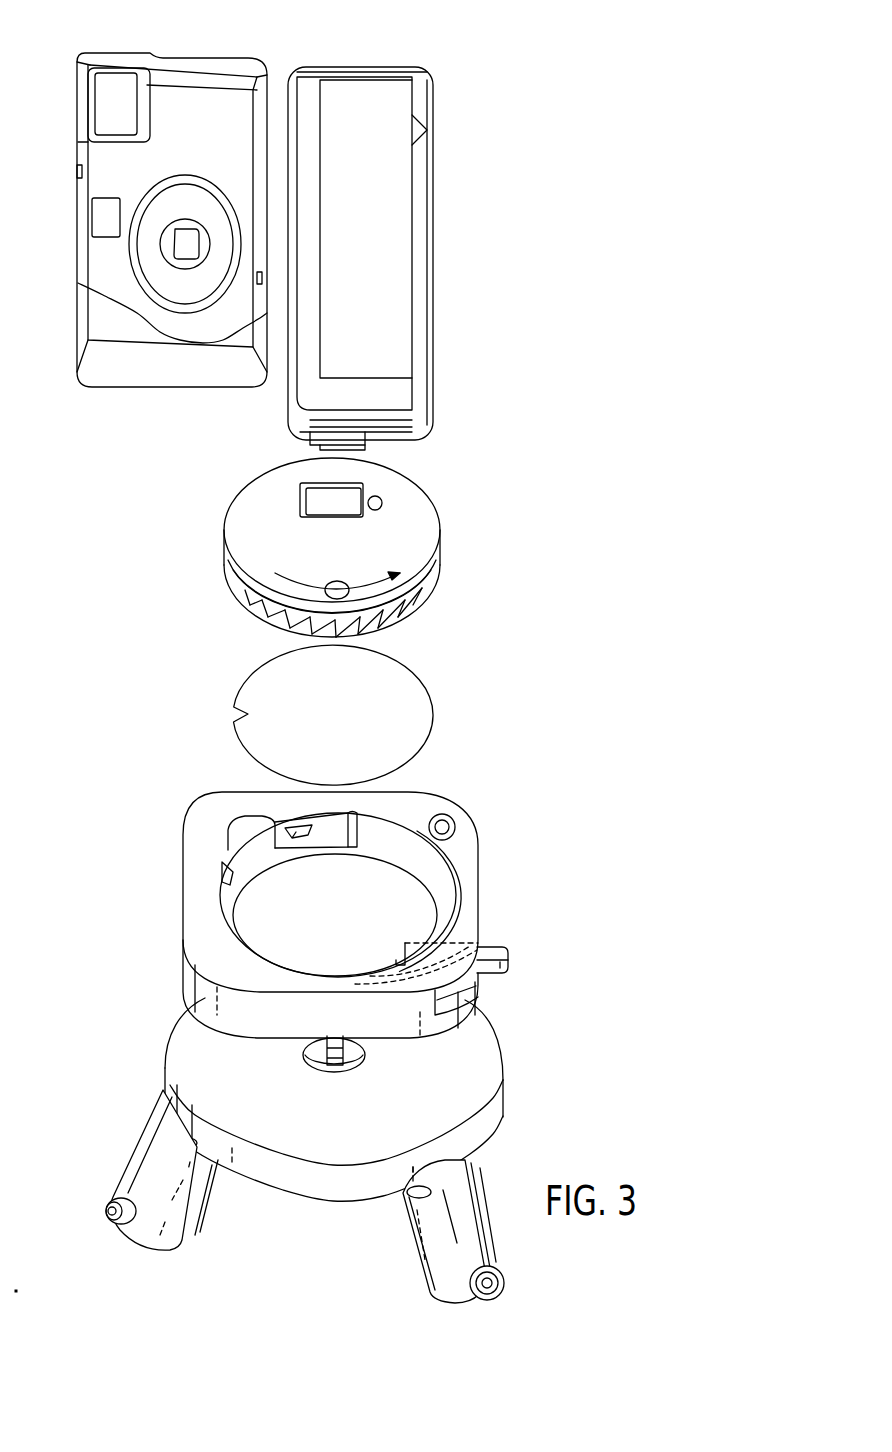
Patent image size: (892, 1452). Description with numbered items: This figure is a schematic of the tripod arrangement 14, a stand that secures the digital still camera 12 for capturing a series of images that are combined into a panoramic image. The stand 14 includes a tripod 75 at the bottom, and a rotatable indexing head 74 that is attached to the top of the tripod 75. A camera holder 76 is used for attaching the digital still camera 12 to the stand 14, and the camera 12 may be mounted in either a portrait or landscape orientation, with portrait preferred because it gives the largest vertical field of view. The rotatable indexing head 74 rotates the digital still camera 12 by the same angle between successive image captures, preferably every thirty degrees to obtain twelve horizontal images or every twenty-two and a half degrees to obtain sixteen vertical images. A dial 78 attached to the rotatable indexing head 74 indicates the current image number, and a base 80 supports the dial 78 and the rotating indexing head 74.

The digital still camera 12 is at (197, 52).
The tripod arrangement 14 is at (640, 652).
The rotatable indexing head 74 is at (437, 503).
The tripod 75 is at (492, 1117).
The camera holder 76 is at (433, 148).
The dial 78 is at (433, 707).
The base 80 is at (480, 862).